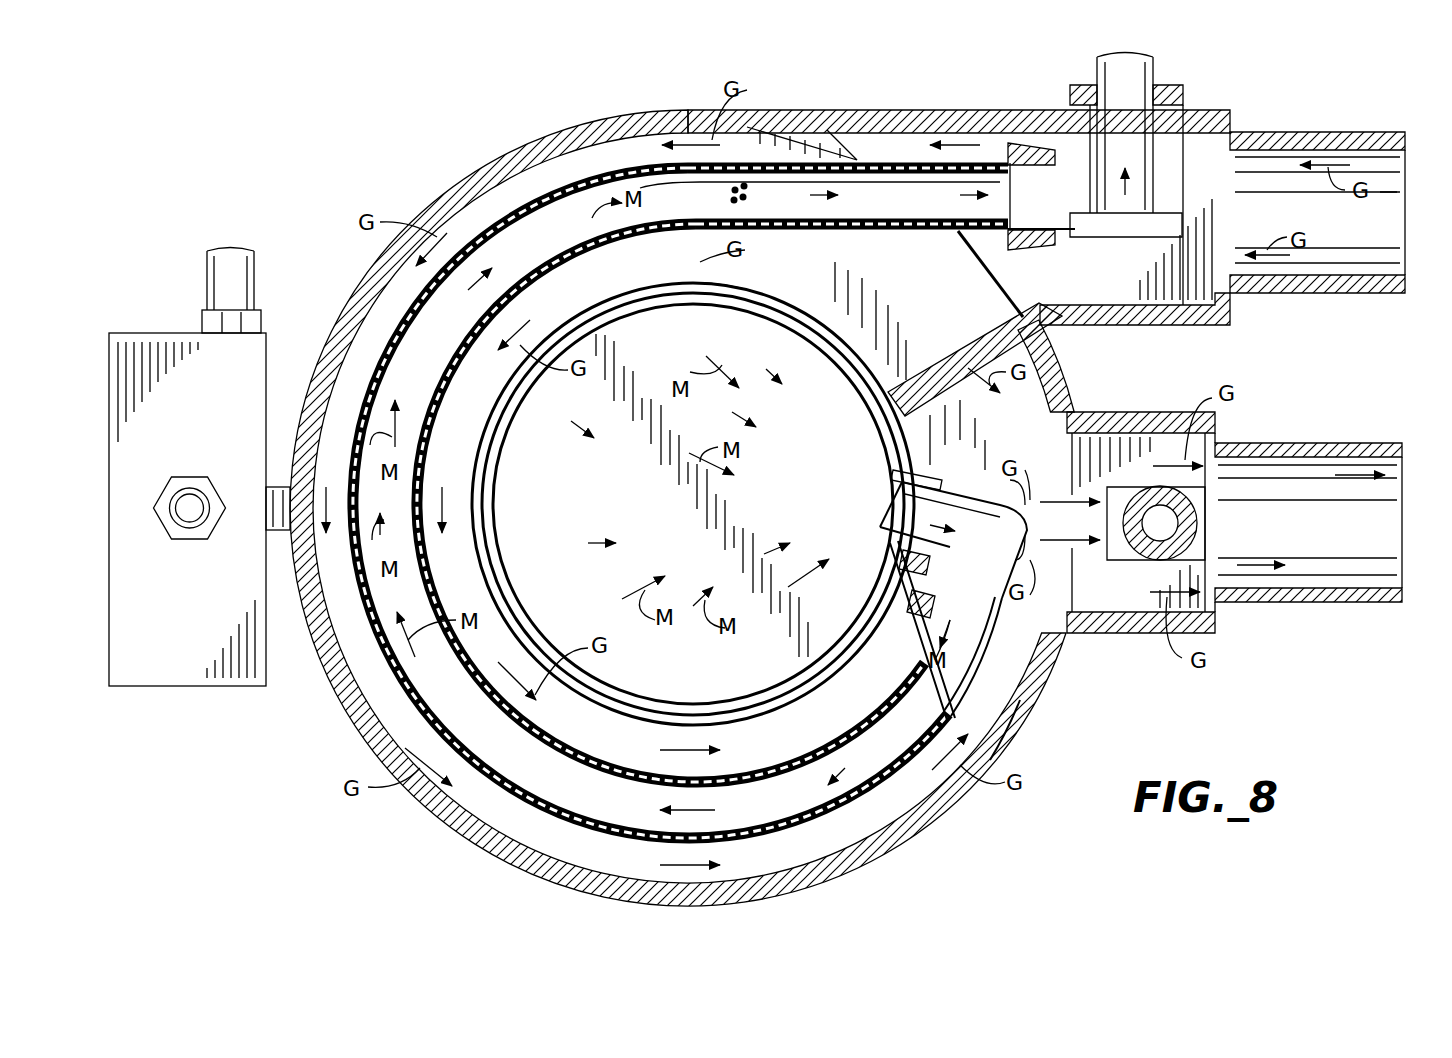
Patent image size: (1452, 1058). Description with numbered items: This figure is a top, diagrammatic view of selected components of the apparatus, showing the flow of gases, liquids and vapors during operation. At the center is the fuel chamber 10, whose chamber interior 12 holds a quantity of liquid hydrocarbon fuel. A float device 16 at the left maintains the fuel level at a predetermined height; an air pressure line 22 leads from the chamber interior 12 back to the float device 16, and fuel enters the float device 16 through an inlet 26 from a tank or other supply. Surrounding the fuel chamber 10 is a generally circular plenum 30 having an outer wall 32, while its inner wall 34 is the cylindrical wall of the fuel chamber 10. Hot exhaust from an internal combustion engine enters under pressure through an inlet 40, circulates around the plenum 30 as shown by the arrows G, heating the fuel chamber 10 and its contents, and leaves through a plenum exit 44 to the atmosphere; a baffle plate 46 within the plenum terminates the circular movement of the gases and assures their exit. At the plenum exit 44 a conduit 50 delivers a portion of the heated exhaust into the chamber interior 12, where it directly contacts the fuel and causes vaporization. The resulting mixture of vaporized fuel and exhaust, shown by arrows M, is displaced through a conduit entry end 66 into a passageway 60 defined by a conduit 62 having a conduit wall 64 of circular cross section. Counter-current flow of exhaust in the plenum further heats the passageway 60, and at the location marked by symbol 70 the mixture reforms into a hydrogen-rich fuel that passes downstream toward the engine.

The fuel chamber 10 is at (750, 300).
The chamber interior 12 is at (703, 681).
The float device 16 is at (143, 333).
The air pressure line 22 is at (190, 488).
The inlet 26 is at (233, 308).
The plenum 30 is at (1012, 683).
The outer wall 32 is at (1012, 735).
The inner wall 34 is at (697, 288).
The inlet 40 is at (1293, 273).
The plenum exit 44 is at (1295, 598).
The baffle plate 46 is at (1003, 330).
The conduit 50 is at (1167, 560).
The passageway 60 is at (870, 215).
The conduit 62 is at (975, 487).
The conduit wall 64 is at (857, 788).
The conduit entry end 66 is at (895, 503).
The symbol 70 is at (740, 184).